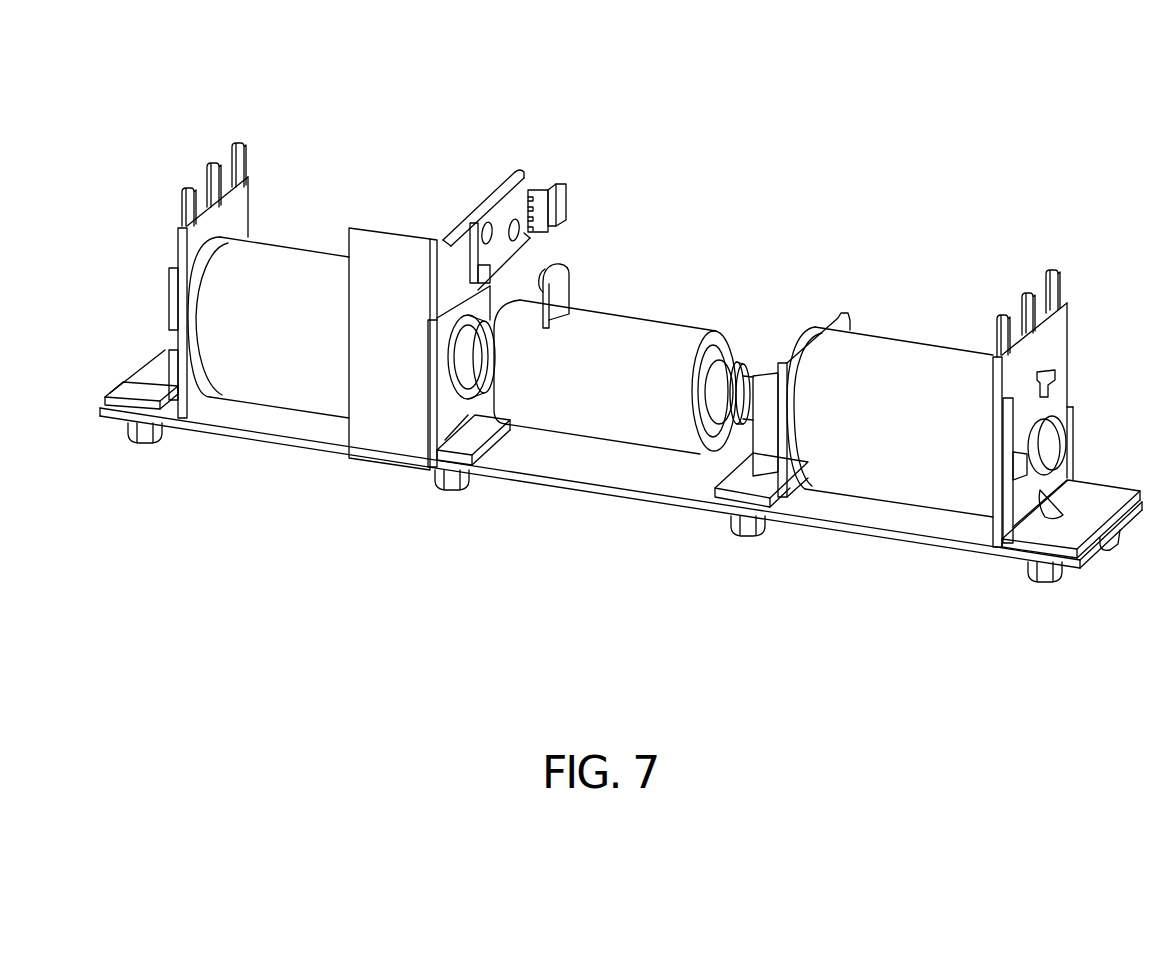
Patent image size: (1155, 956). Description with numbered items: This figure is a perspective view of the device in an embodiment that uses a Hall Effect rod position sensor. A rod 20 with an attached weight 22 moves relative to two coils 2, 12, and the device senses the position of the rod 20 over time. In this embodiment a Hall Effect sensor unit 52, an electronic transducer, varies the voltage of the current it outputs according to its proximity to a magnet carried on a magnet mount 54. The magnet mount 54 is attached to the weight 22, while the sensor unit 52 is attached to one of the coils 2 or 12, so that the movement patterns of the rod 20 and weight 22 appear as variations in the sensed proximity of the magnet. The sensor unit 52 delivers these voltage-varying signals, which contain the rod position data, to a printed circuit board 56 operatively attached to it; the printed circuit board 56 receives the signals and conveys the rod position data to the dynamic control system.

The coil 2 is at (271, 265).
The coil 12 is at (858, 380).
The rod 20 is at (722, 386).
The weight 22 is at (640, 356).
The Hall Effect sensor unit 52 is at (468, 237).
The magnet mount 54 is at (565, 266).
The printed circuit board 56 is at (505, 213).